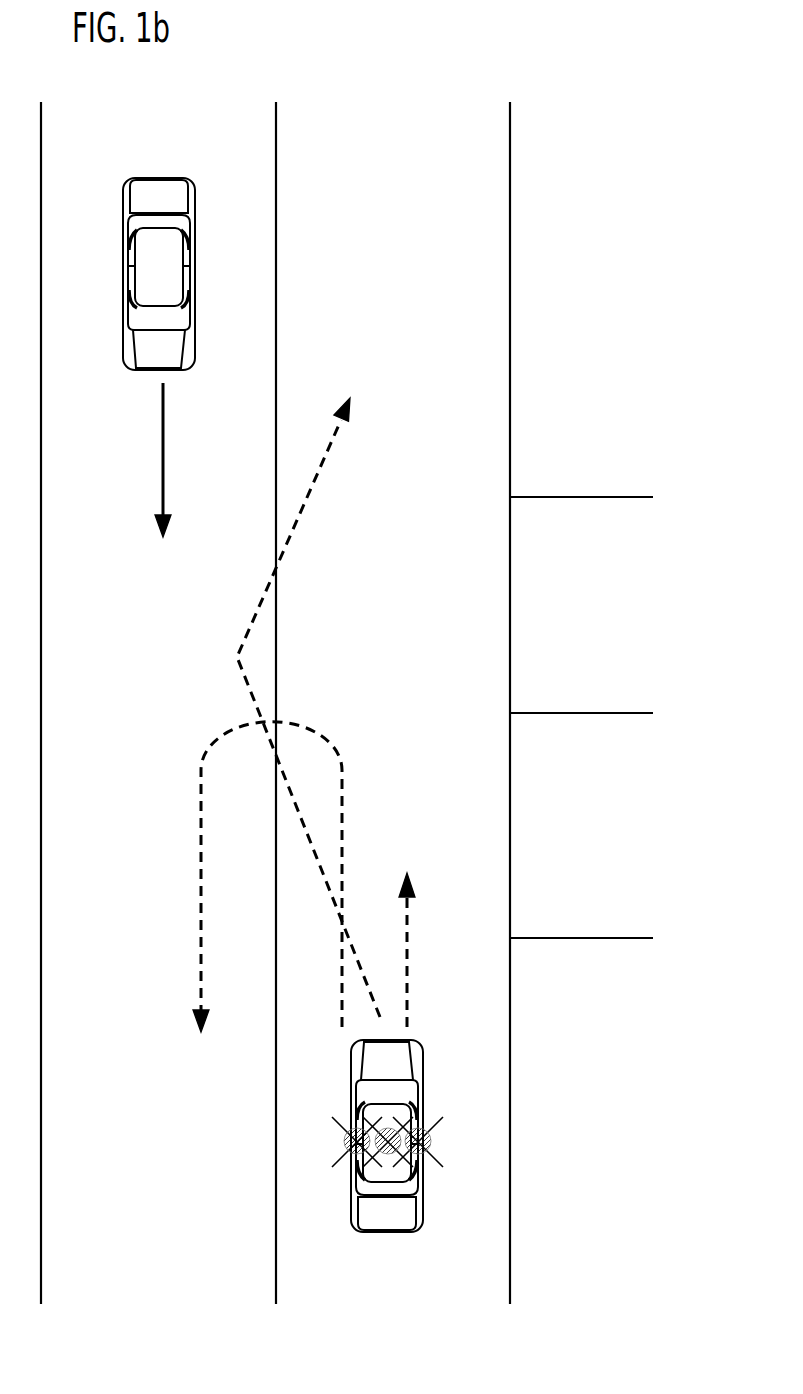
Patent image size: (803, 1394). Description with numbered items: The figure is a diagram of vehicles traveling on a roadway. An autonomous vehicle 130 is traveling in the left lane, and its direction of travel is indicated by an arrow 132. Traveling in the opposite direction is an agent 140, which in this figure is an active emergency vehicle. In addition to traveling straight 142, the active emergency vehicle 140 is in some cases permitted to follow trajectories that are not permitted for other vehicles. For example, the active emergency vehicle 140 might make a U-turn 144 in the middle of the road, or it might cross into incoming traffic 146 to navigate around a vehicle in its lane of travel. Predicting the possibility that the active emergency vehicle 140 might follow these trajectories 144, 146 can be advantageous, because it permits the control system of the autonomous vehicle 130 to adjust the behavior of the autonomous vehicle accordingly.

The autonomous vehicle 130 is at (203, 204).
The travel direction of other vehicle 132 is at (182, 462).
The active emergency vehicle 140 is at (427, 1067).
The traveling straight 142 is at (415, 918).
The U-turn 144 is at (350, 748).
The crossing into incoming traffic 146 is at (327, 470).